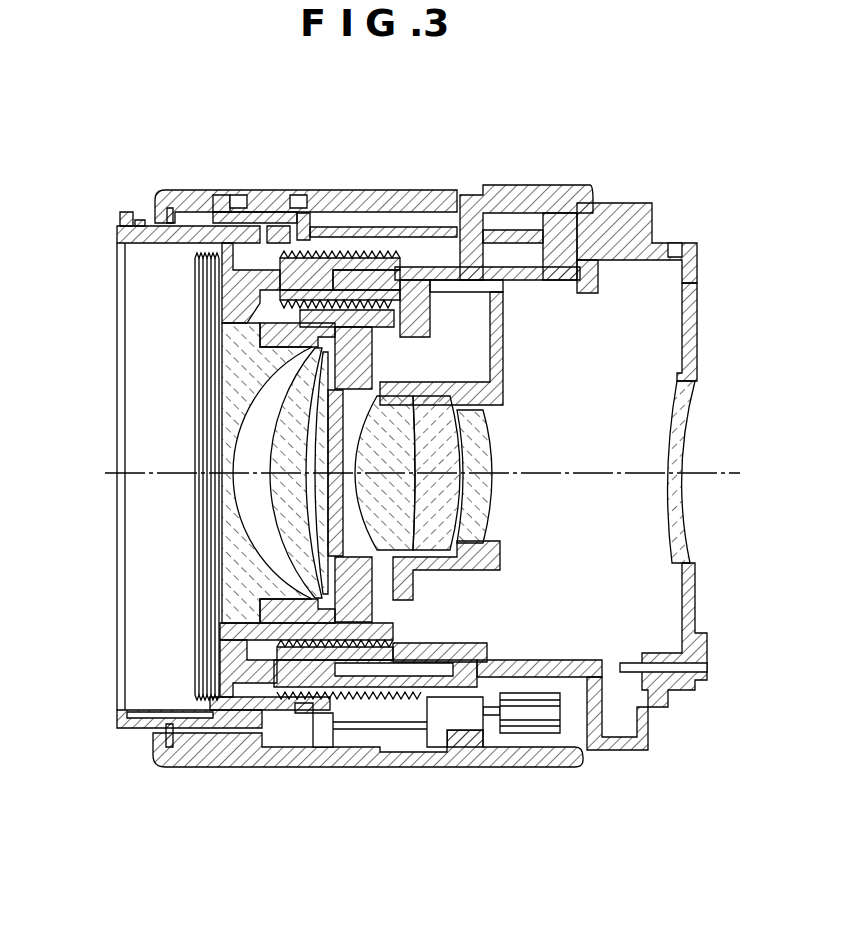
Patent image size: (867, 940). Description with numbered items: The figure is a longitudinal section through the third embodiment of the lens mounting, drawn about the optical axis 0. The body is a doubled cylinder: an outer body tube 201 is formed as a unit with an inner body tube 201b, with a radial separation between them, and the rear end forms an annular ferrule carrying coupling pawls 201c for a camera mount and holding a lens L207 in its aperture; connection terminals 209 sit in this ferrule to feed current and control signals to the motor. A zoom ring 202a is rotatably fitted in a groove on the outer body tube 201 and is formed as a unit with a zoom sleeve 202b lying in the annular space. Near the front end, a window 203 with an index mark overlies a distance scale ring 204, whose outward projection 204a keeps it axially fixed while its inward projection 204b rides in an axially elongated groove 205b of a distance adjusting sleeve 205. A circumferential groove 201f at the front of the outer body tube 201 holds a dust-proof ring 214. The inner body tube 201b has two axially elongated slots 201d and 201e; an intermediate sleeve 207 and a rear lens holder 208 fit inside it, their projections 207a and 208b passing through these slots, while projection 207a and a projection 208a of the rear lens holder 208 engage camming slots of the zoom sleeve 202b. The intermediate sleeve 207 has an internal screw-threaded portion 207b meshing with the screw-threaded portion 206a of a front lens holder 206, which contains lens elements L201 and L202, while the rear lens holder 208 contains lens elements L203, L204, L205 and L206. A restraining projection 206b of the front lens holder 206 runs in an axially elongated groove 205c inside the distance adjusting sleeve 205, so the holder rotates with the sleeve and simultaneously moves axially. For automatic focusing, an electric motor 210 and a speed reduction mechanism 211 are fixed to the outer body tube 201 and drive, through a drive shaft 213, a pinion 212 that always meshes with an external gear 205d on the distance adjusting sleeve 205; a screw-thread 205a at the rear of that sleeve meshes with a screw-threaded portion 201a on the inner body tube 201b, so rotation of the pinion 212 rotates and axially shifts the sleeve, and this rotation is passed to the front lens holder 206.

The optical axis 0 is at (105, 473).
The outer body tube 201 is at (440, 205).
The screw-threaded portion 201a is at (228, 262).
The inner body tube 201b is at (590, 292).
The coupling pawls 201c is at (690, 243).
The axially elongated slot 201d is at (455, 740).
The axially elongated slot 201e is at (460, 290).
The circumferential groove 201f is at (170, 208).
The zoom ring 202a is at (535, 205).
The zoom sleeve 202b is at (552, 270).
The window 203 is at (265, 220).
The distance scale ring 204 is at (238, 200).
The projection 204a is at (222, 205).
The projection 204b is at (284, 228).
The distance adjusting sleeve 205 is at (118, 237).
The screw-thread 205a is at (392, 255).
The axially elongated groove 205b is at (335, 228).
The axially elongated groove 205c is at (130, 712).
The external gear 205d is at (303, 713).
The front lens holder 206 is at (233, 293).
The screw-threaded portion 206a is at (395, 337).
The restraining projection 206b is at (173, 745).
The intermediate sleeve 207 is at (467, 672).
The projection 207a is at (500, 667).
The screw-threaded portion 207b is at (290, 296).
The rear lens holder 208 is at (497, 352).
The projection 208a is at (305, 272).
The projection 208b is at (377, 272).
The connection terminals 209 is at (707, 668).
The electric motor 210 is at (530, 720).
The speed reduction mechanism 211 is at (462, 715).
The pinion 212 is at (323, 735).
The drive shaft 213 is at (380, 729).
The dust-proof ring 214 is at (153, 222).
The lens element L201 is at (228, 445).
The lens element L202 is at (280, 485).
The lens element L203 is at (322, 503).
The lens element L204 is at (390, 500).
The lens element L205 is at (435, 465).
The lens element L206 is at (478, 437).
The lens L207 is at (677, 500).